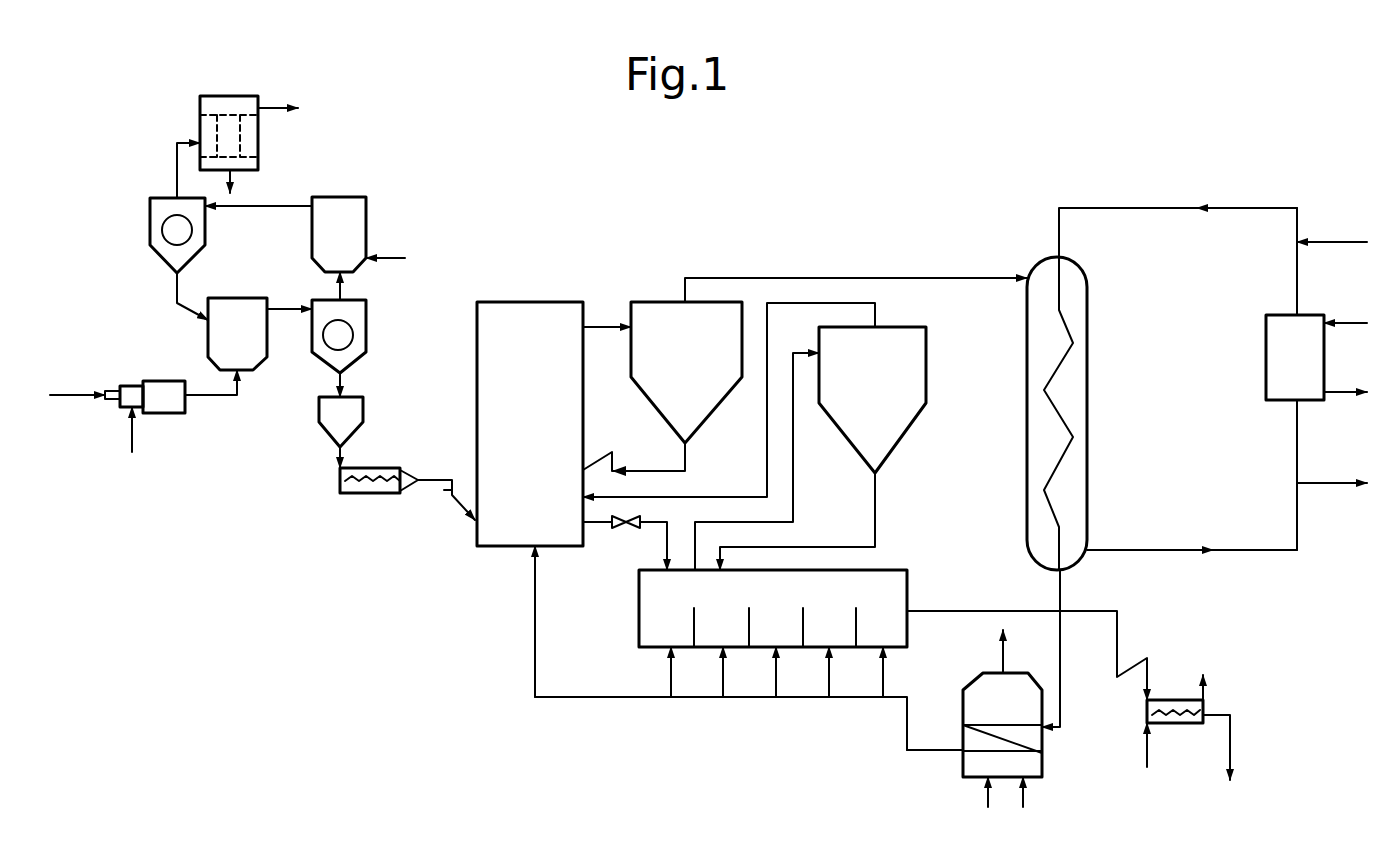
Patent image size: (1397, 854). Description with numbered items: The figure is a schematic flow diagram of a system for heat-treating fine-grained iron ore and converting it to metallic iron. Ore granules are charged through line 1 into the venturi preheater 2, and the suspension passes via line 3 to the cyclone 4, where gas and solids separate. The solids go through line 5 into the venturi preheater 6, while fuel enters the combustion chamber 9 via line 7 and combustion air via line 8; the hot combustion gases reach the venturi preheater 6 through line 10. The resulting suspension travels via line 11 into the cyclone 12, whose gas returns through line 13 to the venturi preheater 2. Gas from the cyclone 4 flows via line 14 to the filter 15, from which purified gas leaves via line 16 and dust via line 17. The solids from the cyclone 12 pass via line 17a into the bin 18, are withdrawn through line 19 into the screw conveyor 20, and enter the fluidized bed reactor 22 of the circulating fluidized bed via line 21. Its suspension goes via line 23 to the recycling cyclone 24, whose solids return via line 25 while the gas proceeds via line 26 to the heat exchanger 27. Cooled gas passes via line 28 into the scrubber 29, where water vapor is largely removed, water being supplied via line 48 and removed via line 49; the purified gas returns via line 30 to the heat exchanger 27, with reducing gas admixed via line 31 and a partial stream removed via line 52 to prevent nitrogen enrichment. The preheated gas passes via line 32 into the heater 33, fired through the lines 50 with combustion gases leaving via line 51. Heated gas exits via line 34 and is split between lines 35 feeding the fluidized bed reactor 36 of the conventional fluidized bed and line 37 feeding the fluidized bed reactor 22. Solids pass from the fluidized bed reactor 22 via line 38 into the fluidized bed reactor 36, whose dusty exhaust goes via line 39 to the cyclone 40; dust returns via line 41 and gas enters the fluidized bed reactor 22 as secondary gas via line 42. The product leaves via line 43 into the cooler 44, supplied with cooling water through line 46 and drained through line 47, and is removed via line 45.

The line 1 is at (390, 255).
The venturi preheater 2 is at (366, 215).
The line 3 is at (293, 206).
The cyclone 4 is at (150, 218).
The line 5 is at (173, 285).
The venturi preheater 6 is at (207, 335).
The line 7 is at (68, 393).
The line 8 is at (130, 440).
The combustion chamber 9 is at (168, 413).
The line 10 is at (228, 399).
The line 11 is at (282, 307).
The cyclone 12 is at (366, 330).
The line 13 is at (345, 296).
The line 14 is at (177, 160).
The filter 15 is at (200, 113).
The line 16 is at (270, 107).
The line 17 is at (233, 186).
The line 17a is at (345, 378).
The bin 18 is at (363, 410).
The line 19 is at (340, 449).
The screw conveyor 20 is at (375, 493).
The line 21 is at (435, 477).
The fluidized bed reactor 22 is at (517, 302).
The line 23 is at (600, 325).
The recycling cyclone 24 is at (647, 398).
The line 25 is at (686, 460).
The line 26 is at (802, 278).
The heat exchanger 27 is at (1087, 410).
The line 28 is at (1192, 548).
The scrubber 29 is at (1266, 353).
The line 30 is at (1160, 205).
The line 31 is at (1335, 240).
The line 32 is at (1062, 597).
The heater 33 is at (1042, 757).
The line 34 is at (923, 750).
The lines 35 is at (671, 683).
The fluidized bed reactor 36 is at (638, 612).
The line 37 is at (535, 608).
The line 38 is at (665, 538).
The line 39 is at (793, 508).
The cyclone 40 is at (926, 377).
The line 41 is at (875, 527).
The line 42 is at (877, 315).
The line 43 is at (953, 611).
The cooler 44 is at (1187, 723).
The line 45 is at (1237, 747).
The line 46 is at (1143, 750).
The line 47 is at (1207, 698).
The line 48 is at (1343, 322).
The line 49 is at (1342, 390).
The lines 50 is at (988, 805).
The line 51 is at (1005, 658).
The line 52 is at (1340, 480).